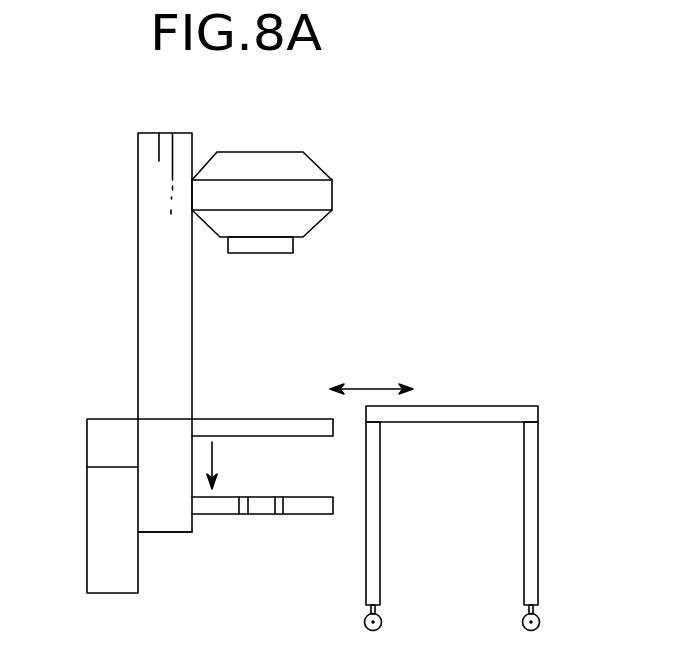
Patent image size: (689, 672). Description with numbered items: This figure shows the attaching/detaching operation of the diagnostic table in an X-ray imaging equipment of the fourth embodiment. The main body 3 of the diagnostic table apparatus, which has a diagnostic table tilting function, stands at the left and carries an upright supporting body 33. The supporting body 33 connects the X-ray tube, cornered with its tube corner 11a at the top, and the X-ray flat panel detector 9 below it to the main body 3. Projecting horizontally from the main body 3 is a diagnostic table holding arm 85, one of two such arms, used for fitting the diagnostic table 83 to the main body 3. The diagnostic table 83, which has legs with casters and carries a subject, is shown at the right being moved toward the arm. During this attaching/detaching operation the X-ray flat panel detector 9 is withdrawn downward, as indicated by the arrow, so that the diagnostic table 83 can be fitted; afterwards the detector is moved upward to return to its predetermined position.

The supporting body 33 is at (138, 166).
The tube corner 11a is at (283, 152).
The diagnostic table holding arm 85 is at (268, 427).
The X-ray flat panel detector 9 is at (312, 508).
The main body of diagnostic table apparatus 3 is at (98, 502).
The diagnostic table 83 is at (546, 419).